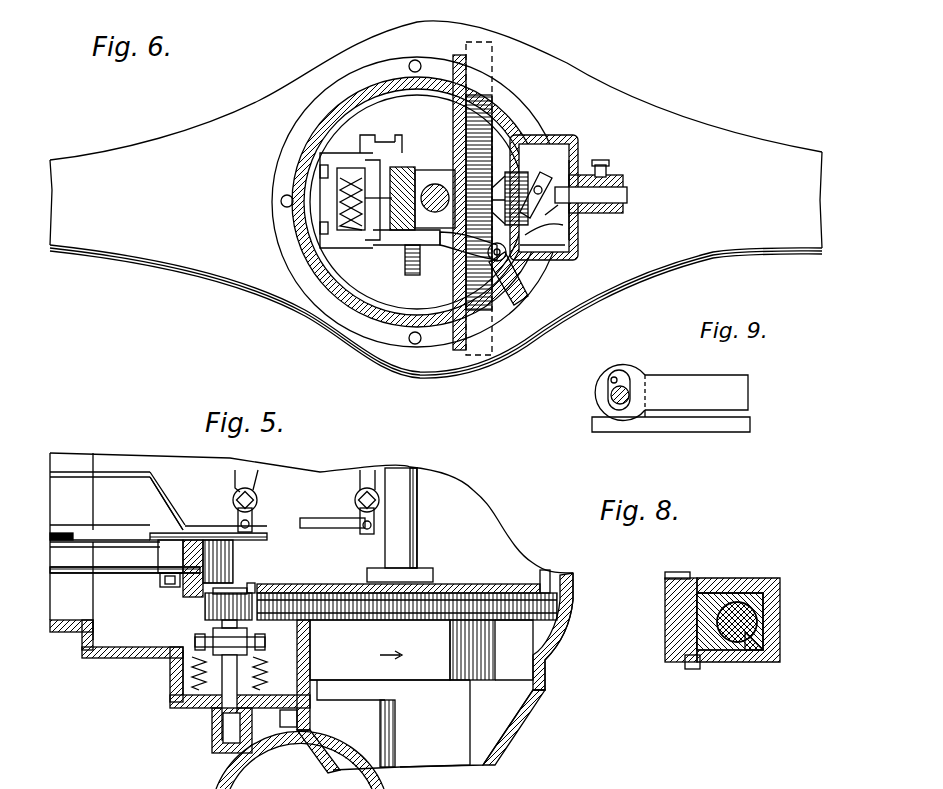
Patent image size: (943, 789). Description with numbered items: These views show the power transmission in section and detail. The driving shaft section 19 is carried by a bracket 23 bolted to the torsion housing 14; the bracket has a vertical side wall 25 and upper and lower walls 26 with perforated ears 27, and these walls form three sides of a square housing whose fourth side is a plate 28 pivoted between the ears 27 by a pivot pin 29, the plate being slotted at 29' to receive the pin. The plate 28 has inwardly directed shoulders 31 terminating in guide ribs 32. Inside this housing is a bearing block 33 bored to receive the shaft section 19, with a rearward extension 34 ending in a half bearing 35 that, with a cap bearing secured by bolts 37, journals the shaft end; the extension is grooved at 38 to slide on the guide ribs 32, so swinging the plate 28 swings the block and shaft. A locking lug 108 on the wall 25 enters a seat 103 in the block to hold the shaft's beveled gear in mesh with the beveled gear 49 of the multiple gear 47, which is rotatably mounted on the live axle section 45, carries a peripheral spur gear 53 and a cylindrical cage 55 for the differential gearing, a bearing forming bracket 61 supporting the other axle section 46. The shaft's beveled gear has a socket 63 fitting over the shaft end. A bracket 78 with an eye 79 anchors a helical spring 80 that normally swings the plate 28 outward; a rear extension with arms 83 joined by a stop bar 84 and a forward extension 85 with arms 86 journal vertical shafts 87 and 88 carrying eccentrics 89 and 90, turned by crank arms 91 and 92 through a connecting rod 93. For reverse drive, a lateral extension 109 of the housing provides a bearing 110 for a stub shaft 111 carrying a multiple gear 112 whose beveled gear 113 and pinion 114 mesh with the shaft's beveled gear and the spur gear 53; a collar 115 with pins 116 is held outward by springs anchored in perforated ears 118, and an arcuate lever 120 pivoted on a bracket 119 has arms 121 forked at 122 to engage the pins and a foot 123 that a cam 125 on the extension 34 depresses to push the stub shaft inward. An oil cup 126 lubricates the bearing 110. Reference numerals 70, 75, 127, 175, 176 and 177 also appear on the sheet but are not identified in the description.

In FIG. 6, the torsion housing 14 is at (296, 165).
In FIG. 5, the torsion housing 14 is at (122, 458).
In FIG. 5, the driving shaft section 19 is at (125, 568).
In FIG. 8, the bracket 23 is at (775, 580).
In FIG. 8, the side wall 25 is at (770, 612).
In FIG. 8, the upper and lower walls 26 is at (752, 578).
In FIG. 9, the perforated ears 27 is at (648, 362).
In FIG. 6, the plate 28 is at (402, 190).
In FIG. 9, the plate 28 is at (714, 383).
In FIG. 8, the plate 28 is at (668, 630).
In FIG. 5, the plate 28 is at (156, 530).
In FIG. 9, the pivot pin 29 is at (589, 405).
In FIG. 9, the slot 29' is at (581, 391).
In FIG. 5, the shoulders 31 is at (110, 530).
In FIG. 8, the guide ribs 32 is at (690, 576).
In FIG. 8, the bearing block 33 is at (700, 608).
In FIG. 5, the rearward extension 34 is at (65, 540).
In FIG. 6, the half bearing 35 is at (435, 189).
In FIG. 5, the half bearing 35 is at (180, 545).
In FIG. 8, the bolts 37 is at (690, 667).
In FIG. 5, the bolts 37 is at (168, 587).
In FIG. 6, the grooves 38 is at (410, 276).
In FIG. 8, the grooves 38 is at (668, 658).
In FIG. 5, the grooves 38 is at (175, 520).
In FIG. 5, the axle section 45 is at (418, 498).
In FIG. 6, the axle section 46 is at (320, 230).
In FIG. 5, the axle section 46 is at (420, 725).
In FIG. 6, the multiple gear 47 is at (454, 100).
In FIG. 5, the multiple gear 47 is at (450, 618).
In FIG. 6, the beveled gear 49 is at (466, 141).
In FIG. 5, the beveled gear 49 is at (520, 585).
In FIG. 6, the spur gear 53 is at (498, 96).
In FIG. 5, the spur gear 53 is at (560, 608).
In FIG. 5, the cylindrical cage 55 is at (490, 640).
In FIG. 5, the bearing forming bracket 61 is at (370, 700).
In FIG. 5, the socket 63 is at (200, 586).
In FIG. 8, the roller 70 is at (752, 640).
In FIG. 6, the housing 75 is at (604, 103).
In FIG. 5, the housing 75 is at (478, 503).
In FIG. 6, the bracket 78 is at (320, 183).
In FIG. 6, the eye 79 is at (378, 206).
In FIG. 6, the helical spring 80 is at (352, 236).
In FIG. 5, the upper and lower arms 83 is at (385, 467).
In FIG. 5, the stop bar 84 is at (380, 566).
In FIG. 6, the extension 85 is at (300, 152).
In FIG. 6, the upper and lower arms 86 is at (340, 156).
In FIG. 5, the upper and lower arms 86 is at (236, 470).
In FIG. 5, the vertical shaft 87 is at (360, 470).
In FIG. 5, the shaft 88 is at (261, 470).
In FIG. 5, the eccentric 89 is at (380, 520).
In FIG. 6, the eccentric 90 is at (385, 248).
In FIG. 5, the eccentric 90 is at (256, 515).
In FIG. 5, the crank arm 91 is at (355, 507).
In FIG. 6, the crank arm 92 is at (385, 130).
In FIG. 5, the crank arm 92 is at (258, 497).
In FIG. 6, the connecting rod 93 is at (400, 138).
In FIG. 5, the connecting rod 93 is at (148, 472).
In FIG. 8, the seat 103 is at (765, 637).
In FIG. 8, the locking lug 108 is at (770, 598).
In FIG. 5, the lateral extension 109 is at (172, 668).
In FIG. 6, the bearing 110 is at (627, 195).
In FIG. 5, the bearing 110 is at (282, 728).
In FIG. 6, the stub shaft 111 is at (580, 220).
In FIG. 5, the stub shaft 111 is at (213, 742).
In FIG. 6, the multiple gear 112 is at (530, 140).
In FIG. 5, the multiple gear 112 is at (250, 625).
In FIG. 6, the beveled gear 113 is at (518, 172).
In FIG. 5, the beveled gear 113 is at (235, 585).
In FIG. 6, the pinion 114 is at (570, 260).
In FIG. 5, the pinion 114 is at (255, 590).
In FIG. 6, the collar 115 is at (538, 175).
In FIG. 6, the pins 116 is at (572, 165).
In FIG. 5, the perforated ears 118 is at (222, 708).
In FIG. 6, the bracket 119 is at (510, 262).
In FIG. 6, the arcuate lever 120 is at (540, 300).
In FIG. 6, the spaced arms 121 is at (560, 250).
In FIG. 6, the forked portion 122 is at (565, 228).
In FIG. 6, the foot 123 is at (455, 248).
In FIG. 6, the cam 125 is at (462, 262).
In FIG. 5, the cam 125 is at (267, 537).
In FIG. 6, the oil cup 126 is at (609, 163).
In FIG. 5, the wall 127 is at (172, 690).
In FIG. 5, the spring 175 is at (240, 668).
In FIG. 5, the cross piece 176 is at (195, 642).
In FIG. 5, the spring 177 is at (266, 665).